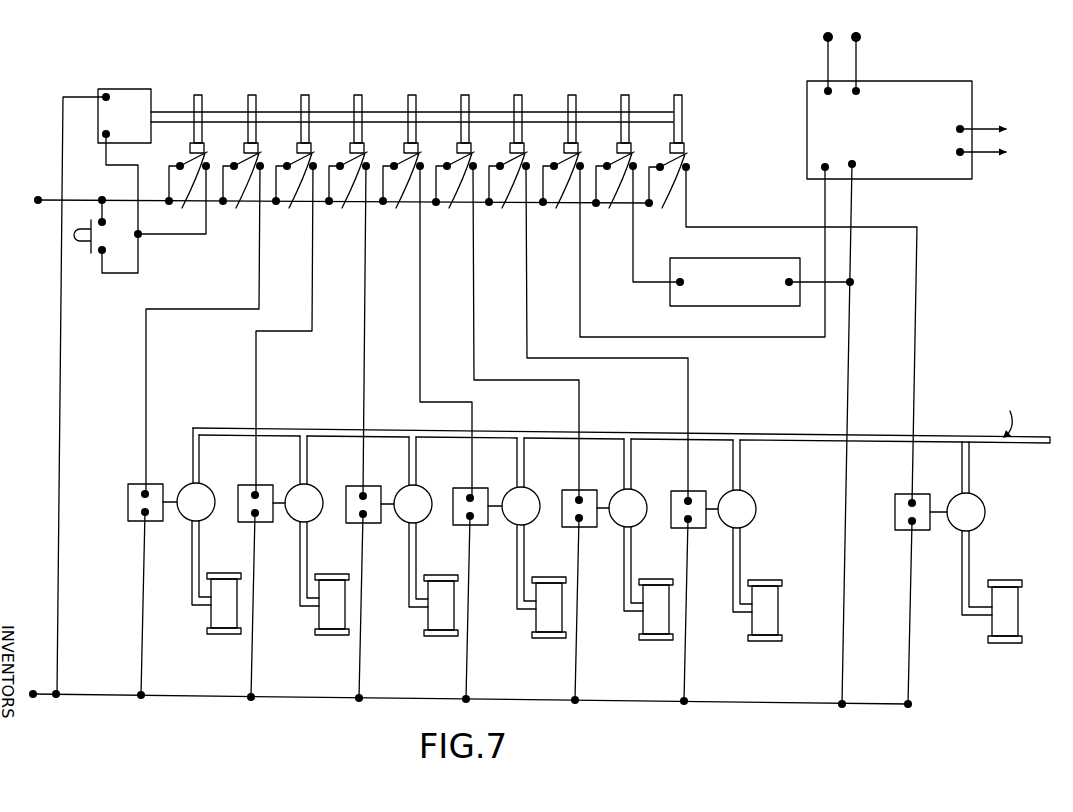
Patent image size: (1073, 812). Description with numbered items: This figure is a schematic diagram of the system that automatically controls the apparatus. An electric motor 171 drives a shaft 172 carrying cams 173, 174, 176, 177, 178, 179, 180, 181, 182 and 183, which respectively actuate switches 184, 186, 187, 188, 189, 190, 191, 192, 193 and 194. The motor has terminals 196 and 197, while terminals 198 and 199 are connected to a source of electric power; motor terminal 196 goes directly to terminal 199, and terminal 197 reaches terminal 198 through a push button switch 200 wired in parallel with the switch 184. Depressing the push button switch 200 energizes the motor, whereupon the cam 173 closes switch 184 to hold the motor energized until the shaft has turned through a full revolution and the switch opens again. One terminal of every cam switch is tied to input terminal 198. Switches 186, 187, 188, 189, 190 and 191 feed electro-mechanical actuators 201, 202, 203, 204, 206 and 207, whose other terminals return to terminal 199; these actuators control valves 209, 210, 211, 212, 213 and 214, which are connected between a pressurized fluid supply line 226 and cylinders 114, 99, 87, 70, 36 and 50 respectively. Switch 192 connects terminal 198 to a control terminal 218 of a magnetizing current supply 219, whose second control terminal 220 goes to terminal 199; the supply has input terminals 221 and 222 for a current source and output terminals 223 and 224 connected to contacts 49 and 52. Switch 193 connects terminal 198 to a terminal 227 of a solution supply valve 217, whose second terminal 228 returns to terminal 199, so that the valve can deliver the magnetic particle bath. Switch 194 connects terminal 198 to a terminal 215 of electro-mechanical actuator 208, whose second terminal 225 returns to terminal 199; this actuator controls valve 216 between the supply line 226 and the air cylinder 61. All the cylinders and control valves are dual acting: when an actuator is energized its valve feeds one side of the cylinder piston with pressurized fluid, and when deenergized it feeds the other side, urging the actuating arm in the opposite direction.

The electric motor 171 is at (143, 97).
The shaft 172 is at (276, 112).
The cam 173 is at (198, 95).
The cam 174 is at (252, 95).
The cam 176 is at (306, 95).
The cam 177 is at (359, 95).
The cam 178 is at (413, 95).
The cam 179 is at (466, 95).
The cam 180 is at (519, 95).
The cam 181 is at (573, 95).
The cam 182 is at (626, 95).
The cam 183 is at (679, 96).
The switch 184 is at (187, 189).
The switch 186 is at (205, 323).
The switch 187 is at (286, 323).
The switch 188 is at (347, 324).
The switch 189 is at (425, 325).
The switch 190 is at (505, 326).
The switch 191 is at (586, 326).
The switch 192 is at (682, 244).
The switch 193 is at (636, 217).
The switch 194 is at (672, 172).
The motor terminal 196 is at (106, 94).
The motor terminal 197 is at (102, 135).
The input terminal 198 is at (38, 200).
The terminal 199 is at (33, 697).
The push button switch 200 is at (76, 236).
The electro-mechanical actuator 201 is at (157, 485).
The electro-mechanical actuator 202 is at (265, 486).
The electro-mechanical actuator 203 is at (375, 487).
The electro-mechanical actuator 204 is at (480, 489).
The electro-mechanical actuator 206 is at (590, 491).
The electro-mechanical actuator 207 is at (697, 492).
The electro-mechanical actuator 208 is at (895, 494).
The valve 209 is at (208, 486).
The valve 210 is at (316, 487).
The valve 211 is at (425, 488).
The valve 212 is at (532, 490).
The valve 213 is at (640, 492).
The valve 214 is at (757, 492).
The terminal 215 is at (906, 505).
The valve 216 is at (985, 512).
The supply valve 217 is at (717, 306).
The control terminal 218 is at (822, 167).
The magnetizing current supply 219 is at (935, 88).
The control terminal 220 is at (855, 165).
The input terminal 221 is at (824, 92).
The input terminal 222 is at (858, 90).
The output terminal 223 is at (961, 126).
The output terminal 224 is at (960, 156).
The terminal 225 is at (907, 527).
The pressurized fluid supply line 226 is at (935, 444).
The terminal 227 is at (678, 288).
The terminal 228 is at (789, 276).
The cylinder 114 is at (212, 617).
The cylinder 99 is at (320, 618).
The cylinder 87 is at (429, 619).
The cylinder 70 is at (537, 621).
The cylinder 36 is at (647, 623).
The cylinder 50 is at (757, 624).
The air cylinder 61 is at (998, 625).
The contact 49 is at (995, 131).
The contact 52 is at (988, 154).